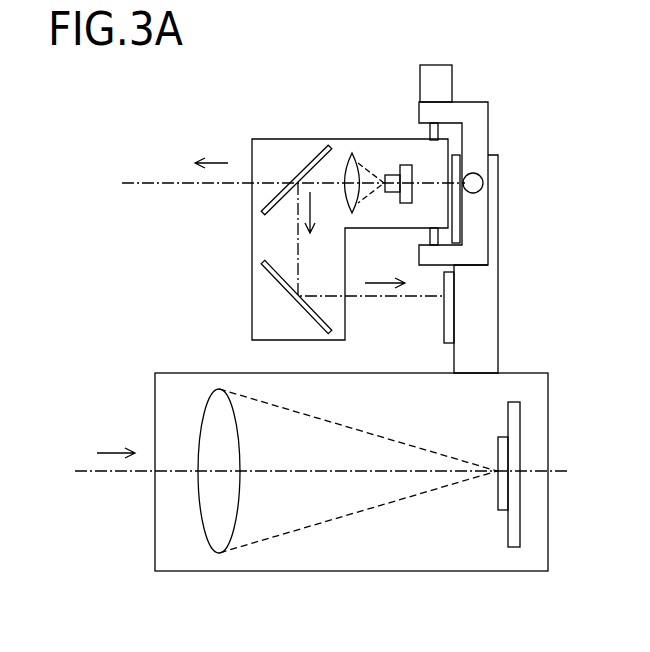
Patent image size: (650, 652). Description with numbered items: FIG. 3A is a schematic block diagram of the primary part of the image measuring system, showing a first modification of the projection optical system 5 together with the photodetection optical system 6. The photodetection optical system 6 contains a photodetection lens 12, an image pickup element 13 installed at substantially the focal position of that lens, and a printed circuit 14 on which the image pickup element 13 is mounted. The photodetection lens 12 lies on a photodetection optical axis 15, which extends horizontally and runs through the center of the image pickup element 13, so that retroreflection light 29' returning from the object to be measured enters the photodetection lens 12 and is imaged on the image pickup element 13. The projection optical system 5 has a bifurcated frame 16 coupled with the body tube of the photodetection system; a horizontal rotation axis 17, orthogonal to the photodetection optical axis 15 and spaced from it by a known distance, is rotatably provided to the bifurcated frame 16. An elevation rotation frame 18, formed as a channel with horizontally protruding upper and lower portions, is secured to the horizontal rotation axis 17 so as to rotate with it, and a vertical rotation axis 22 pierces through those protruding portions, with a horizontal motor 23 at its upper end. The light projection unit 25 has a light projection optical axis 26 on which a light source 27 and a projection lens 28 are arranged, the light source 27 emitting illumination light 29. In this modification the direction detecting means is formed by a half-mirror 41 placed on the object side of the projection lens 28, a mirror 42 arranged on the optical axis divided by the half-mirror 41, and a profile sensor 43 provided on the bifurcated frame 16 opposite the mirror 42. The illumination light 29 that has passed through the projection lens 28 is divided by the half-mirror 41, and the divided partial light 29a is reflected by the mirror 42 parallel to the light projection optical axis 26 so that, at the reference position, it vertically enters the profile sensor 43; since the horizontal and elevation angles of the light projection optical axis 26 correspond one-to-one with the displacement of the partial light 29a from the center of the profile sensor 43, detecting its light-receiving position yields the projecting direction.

The projection optical system 5 is at (528, 218).
The photodetection optical system 6 is at (365, 572).
The photodetection lens 12 is at (208, 546).
The image pickup element 13 is at (500, 511).
The printed circuit 14 is at (515, 548).
The photodetection optical axis 15 is at (123, 474).
The bifurcated frame 16 is at (498, 346).
The horizontal rotation axis 17 is at (478, 172).
The elevation rotation frame 18 is at (489, 108).
The vertical rotation axis 22 is at (428, 130).
The horizontal motor 23 is at (452, 87).
The light projection unit 25 is at (292, 138).
The light projection optical axis 26 is at (153, 182).
The light source 27 is at (402, 165).
The projection lens 28 is at (350, 150).
The illumination light 29 is at (224, 141).
The retroreflection light 29' is at (102, 431).
The partial light 29a is at (363, 298).
The half-mirror 41 is at (267, 203).
The mirror 42 is at (270, 278).
The profile sensor 43 is at (444, 332).